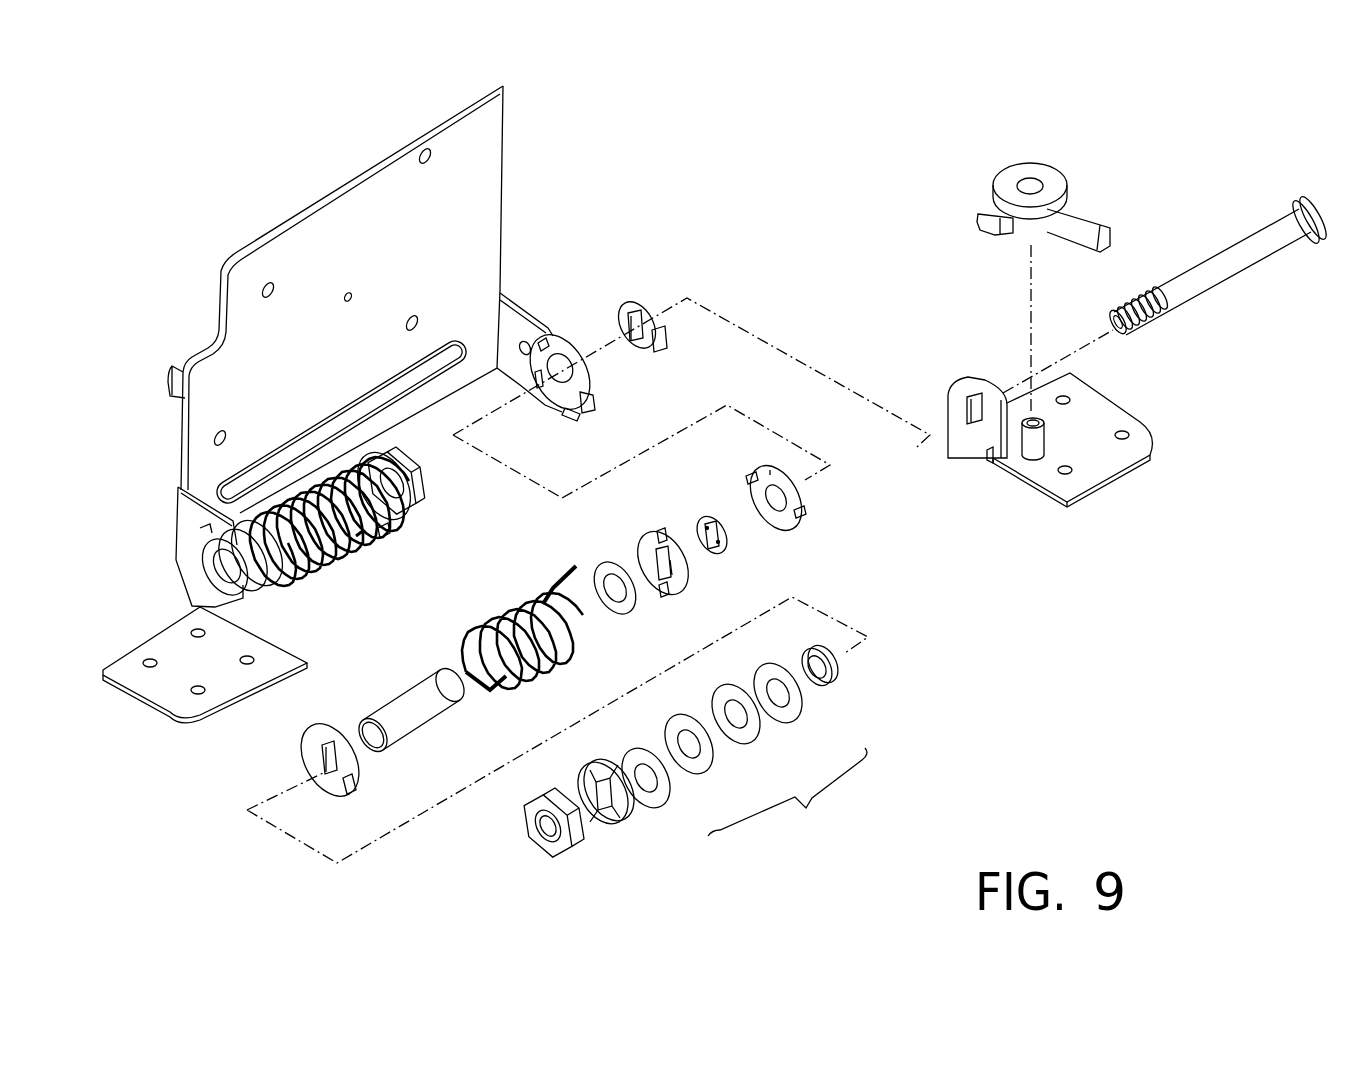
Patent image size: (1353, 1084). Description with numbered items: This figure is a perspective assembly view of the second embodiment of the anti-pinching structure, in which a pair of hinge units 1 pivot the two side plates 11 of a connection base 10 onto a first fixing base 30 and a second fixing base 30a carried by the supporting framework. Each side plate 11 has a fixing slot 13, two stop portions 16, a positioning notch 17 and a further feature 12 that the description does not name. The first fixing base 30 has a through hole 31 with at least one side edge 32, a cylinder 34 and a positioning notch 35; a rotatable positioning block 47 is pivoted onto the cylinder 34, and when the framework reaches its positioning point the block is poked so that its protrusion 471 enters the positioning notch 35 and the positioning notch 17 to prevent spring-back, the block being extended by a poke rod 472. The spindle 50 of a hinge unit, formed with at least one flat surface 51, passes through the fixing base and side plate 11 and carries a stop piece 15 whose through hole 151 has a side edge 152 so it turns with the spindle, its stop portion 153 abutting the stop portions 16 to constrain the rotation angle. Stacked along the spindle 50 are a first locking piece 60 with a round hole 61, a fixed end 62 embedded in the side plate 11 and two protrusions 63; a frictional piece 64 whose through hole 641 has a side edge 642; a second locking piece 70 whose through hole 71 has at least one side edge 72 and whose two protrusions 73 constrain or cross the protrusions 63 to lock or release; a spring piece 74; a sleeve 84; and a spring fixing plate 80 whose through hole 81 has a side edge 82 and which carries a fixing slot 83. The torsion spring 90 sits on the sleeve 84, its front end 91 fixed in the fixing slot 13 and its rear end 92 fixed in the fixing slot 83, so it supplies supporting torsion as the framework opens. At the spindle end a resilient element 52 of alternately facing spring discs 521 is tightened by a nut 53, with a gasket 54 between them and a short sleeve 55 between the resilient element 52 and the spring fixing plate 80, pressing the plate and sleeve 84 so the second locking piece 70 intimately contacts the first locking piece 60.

The hinge unit 1 is at (386, 591).
The connection base 10 is at (243, 215).
The side plate 11 is at (188, 466).
The slot 12 is at (537, 384).
The fixing slot 13 is at (198, 530).
The stop piece 15 is at (668, 315).
The through hole 151 is at (641, 312).
The side edge 152 is at (640, 338).
The stop portion 153 is at (664, 345).
The stop portion 16 is at (550, 340).
The positioning notch 17 is at (580, 420).
The first fixing base 30 is at (1038, 437).
The second fixing base 30a is at (263, 673).
The through hole 31 is at (963, 424).
The side edge 32 is at (985, 408).
The cylinder 34 is at (1035, 448).
The positioning notch 35 is at (985, 458).
The positioning block 47 is at (1036, 193).
The protrusion 471 is at (980, 208).
The poke rod 472 is at (1082, 210).
The spindle 50 is at (218, 577).
The flat surface 51 is at (1197, 293).
The resilient element 52 is at (320, 393).
The spring disc 521 is at (673, 778).
The nut 53 is at (412, 494).
The gasket 54 is at (588, 772).
The short sleeve 55 is at (833, 668).
The first locking piece 60 is at (280, 580).
The round hole 61 is at (781, 496).
The fixed end 62 is at (746, 507).
The protrusion 63 is at (752, 476).
The frictional piece 64 is at (737, 531).
The through hole 641 is at (716, 548).
The side edge 642 is at (730, 537).
The second locking piece 70 is at (300, 572).
The rectangular hole 71 is at (653, 562).
The side edge 72 is at (680, 580).
The protrusion 73 is at (667, 527).
The spring piece 74 is at (618, 612).
The spring fixing plate 80 is at (328, 472).
The through hole 81 is at (328, 773).
The side edge 82 is at (332, 766).
The fixing slot 83 is at (353, 790).
The sleeve 84 is at (428, 720).
The torsion spring 90 is at (302, 567).
The front end 91 is at (565, 566).
The rear end 92 is at (495, 692).